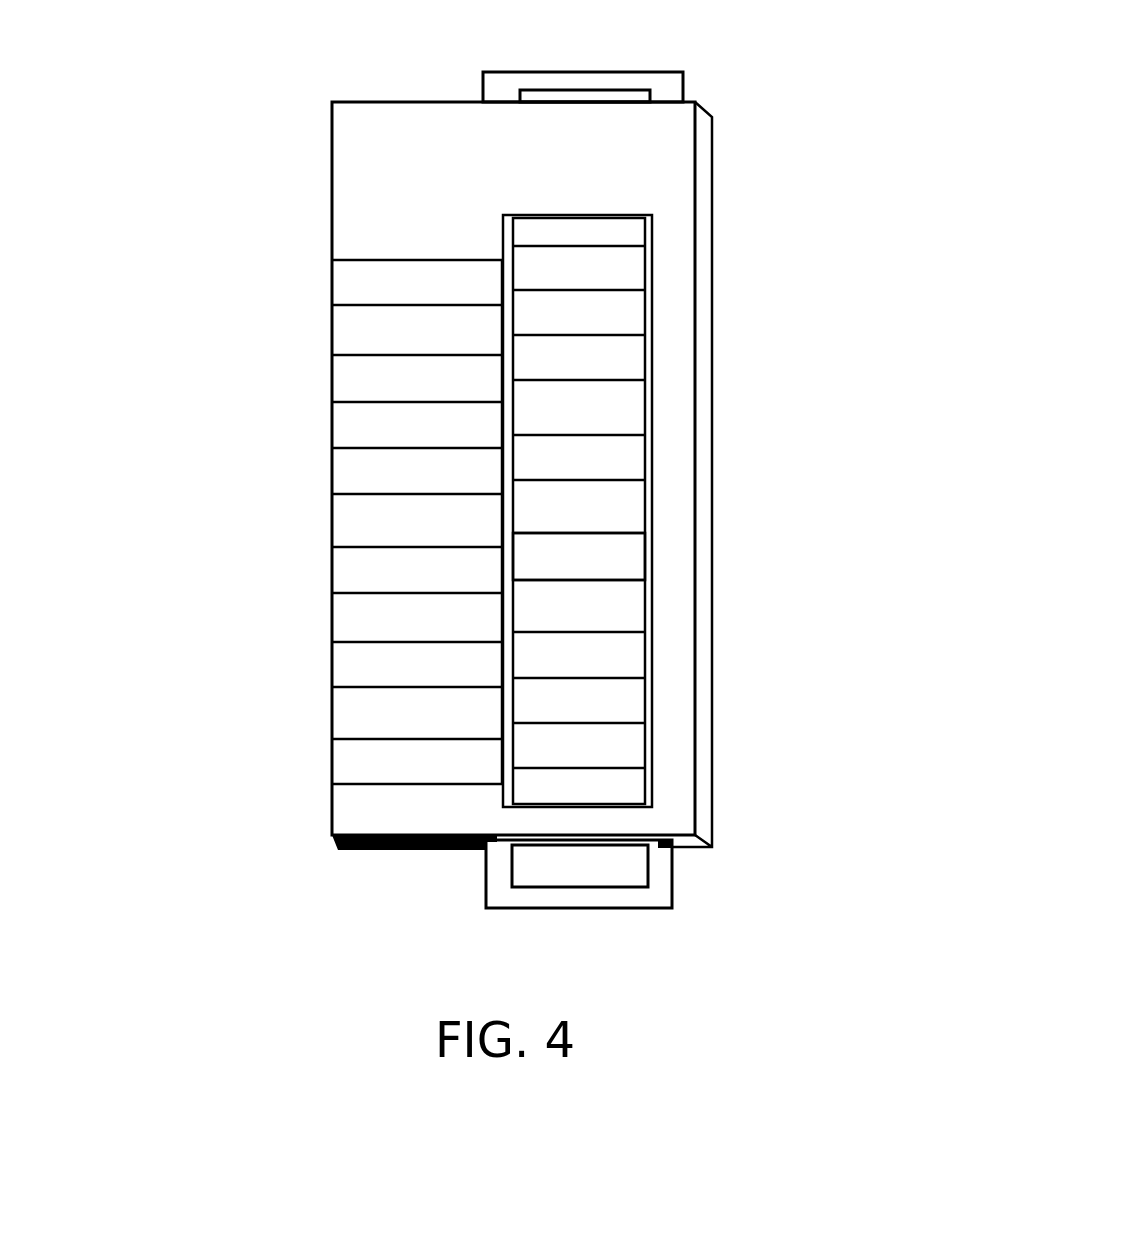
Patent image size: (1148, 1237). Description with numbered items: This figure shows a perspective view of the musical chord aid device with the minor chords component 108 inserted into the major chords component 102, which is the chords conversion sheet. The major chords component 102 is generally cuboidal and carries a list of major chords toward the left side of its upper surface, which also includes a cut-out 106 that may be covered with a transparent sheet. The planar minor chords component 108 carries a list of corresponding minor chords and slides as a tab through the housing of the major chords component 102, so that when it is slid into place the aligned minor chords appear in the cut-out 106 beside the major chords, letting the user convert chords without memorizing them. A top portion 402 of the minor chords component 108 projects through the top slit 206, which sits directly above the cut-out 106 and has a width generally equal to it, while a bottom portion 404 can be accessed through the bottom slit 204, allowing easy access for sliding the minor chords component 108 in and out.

The major chords component 102 is at (332, 178).
The cut-out 106 is at (652, 420).
The minor chords component 108 is at (650, 562).
The top portion 402 is at (483, 82).
The second slit 206 is at (685, 100).
The bottom portion 404 is at (486, 890).
The slit or opening 204 is at (672, 843).